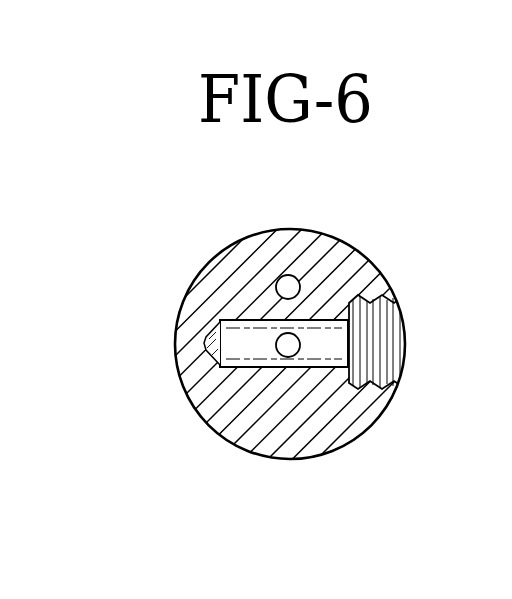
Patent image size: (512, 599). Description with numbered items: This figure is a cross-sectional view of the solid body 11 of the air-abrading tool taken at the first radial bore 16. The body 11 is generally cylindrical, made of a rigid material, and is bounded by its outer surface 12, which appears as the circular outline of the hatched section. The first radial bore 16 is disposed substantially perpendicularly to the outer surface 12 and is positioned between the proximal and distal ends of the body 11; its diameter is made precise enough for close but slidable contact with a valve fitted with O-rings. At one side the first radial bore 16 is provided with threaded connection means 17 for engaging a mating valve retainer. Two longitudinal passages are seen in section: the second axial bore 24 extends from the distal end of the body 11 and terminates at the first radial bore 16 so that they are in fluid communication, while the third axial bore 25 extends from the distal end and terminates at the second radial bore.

The solid body 11 is at (193, 312).
The outer surface 12 is at (214, 258).
The first radial bore 16 is at (313, 369).
The threaded connection means 17 is at (390, 372).
The second axial bore 24 is at (291, 347).
The third axial bore 25 is at (290, 289).